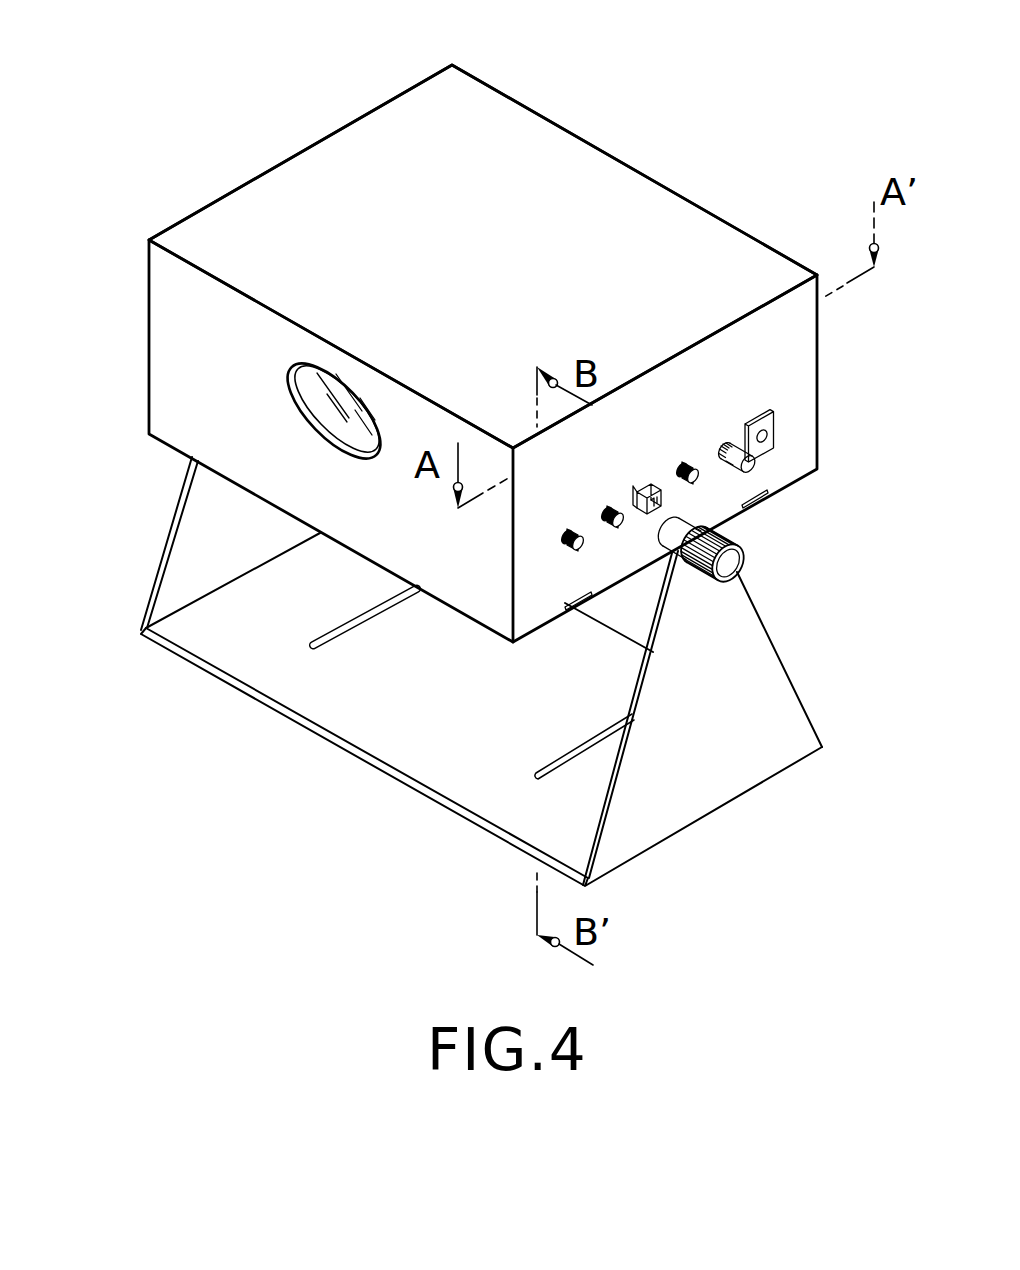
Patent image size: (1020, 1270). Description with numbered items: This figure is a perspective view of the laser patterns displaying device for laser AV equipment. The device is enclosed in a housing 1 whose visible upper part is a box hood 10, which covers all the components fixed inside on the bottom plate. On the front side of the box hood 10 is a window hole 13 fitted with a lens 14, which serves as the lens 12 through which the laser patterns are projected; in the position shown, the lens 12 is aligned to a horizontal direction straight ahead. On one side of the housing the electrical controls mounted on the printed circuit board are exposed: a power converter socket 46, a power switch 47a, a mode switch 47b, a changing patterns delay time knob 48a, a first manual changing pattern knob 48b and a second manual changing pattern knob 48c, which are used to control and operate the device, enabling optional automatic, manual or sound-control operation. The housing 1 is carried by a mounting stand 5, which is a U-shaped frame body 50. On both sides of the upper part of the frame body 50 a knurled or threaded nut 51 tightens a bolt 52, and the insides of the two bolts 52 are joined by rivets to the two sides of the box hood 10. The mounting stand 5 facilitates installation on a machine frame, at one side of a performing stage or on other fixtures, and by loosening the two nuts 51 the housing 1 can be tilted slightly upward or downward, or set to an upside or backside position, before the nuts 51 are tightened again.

The housing 1 is at (616, 153).
The box hood 10 is at (513, 138).
The lens 12 is at (231, 419).
The window hole 13 is at (302, 390).
The lens 14 is at (293, 375).
The power converter socket 46 is at (757, 412).
The power switch 47a is at (738, 455).
The mode switch 47b is at (650, 489).
The changing patterns delay time knob 48a is at (688, 466).
The first manual changing pattern knob 48b is at (609, 510).
The second manual changing pattern knob 48c is at (572, 534).
The knurled or threaded nut 51 is at (725, 562).
The bolt 52 is at (690, 524).
The mounting stand 5 is at (481, 696).
The U-shaped frame body 50 is at (485, 803).